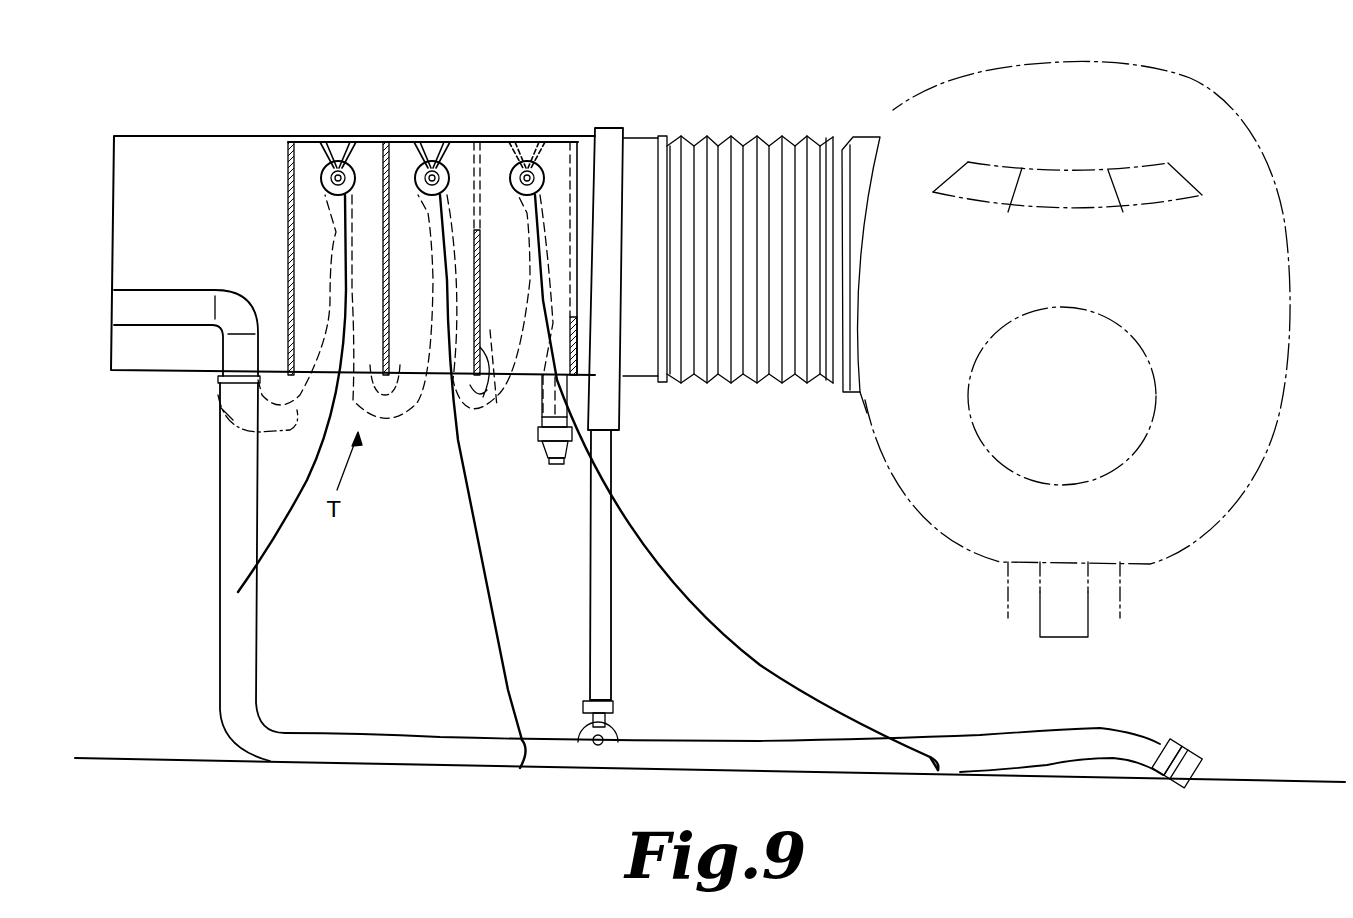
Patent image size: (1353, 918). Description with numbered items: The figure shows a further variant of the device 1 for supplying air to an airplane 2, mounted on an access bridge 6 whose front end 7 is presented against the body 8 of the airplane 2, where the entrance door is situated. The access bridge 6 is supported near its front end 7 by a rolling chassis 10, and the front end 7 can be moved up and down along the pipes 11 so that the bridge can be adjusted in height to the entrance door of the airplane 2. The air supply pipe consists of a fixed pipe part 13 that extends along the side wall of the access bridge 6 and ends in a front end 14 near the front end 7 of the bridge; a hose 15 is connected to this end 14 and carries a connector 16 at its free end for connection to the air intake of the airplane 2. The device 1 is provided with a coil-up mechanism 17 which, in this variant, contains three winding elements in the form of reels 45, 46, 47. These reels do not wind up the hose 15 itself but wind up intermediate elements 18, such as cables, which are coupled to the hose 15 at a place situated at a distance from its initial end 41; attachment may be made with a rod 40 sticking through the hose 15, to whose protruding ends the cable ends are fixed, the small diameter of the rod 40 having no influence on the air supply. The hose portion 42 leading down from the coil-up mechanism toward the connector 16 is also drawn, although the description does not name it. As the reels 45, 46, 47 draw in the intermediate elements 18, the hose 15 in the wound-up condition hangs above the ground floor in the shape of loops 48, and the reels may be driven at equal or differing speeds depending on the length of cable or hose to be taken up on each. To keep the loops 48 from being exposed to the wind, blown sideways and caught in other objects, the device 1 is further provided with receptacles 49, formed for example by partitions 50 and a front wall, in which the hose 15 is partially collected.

The device 1 is at (640, 93).
The airplane 2 is at (1238, 133).
The access bridge 6 is at (200, 143).
The front end 7 is at (852, 168).
The body 8 is at (893, 115).
The rolling chassis 10 is at (607, 717).
The pipes 11 is at (603, 620).
The fixed pipe part 13 is at (147, 315).
The front end 14 is at (219, 384).
The hose 15 is at (277, 430).
The connector 16 is at (560, 463).
The coil-up mechanism 17 is at (317, 120).
The intermediate element 18 is at (350, 203).
The rod 40 is at (235, 594).
The initial end 41 is at (237, 393).
The hose 42 is at (555, 403).
The reel 45 is at (356, 172).
The reel 46 is at (412, 190).
The reel 47 is at (545, 175).
The loops 48 is at (480, 413).
The receptacles 49 is at (390, 165).
The partitions 50 is at (573, 200).